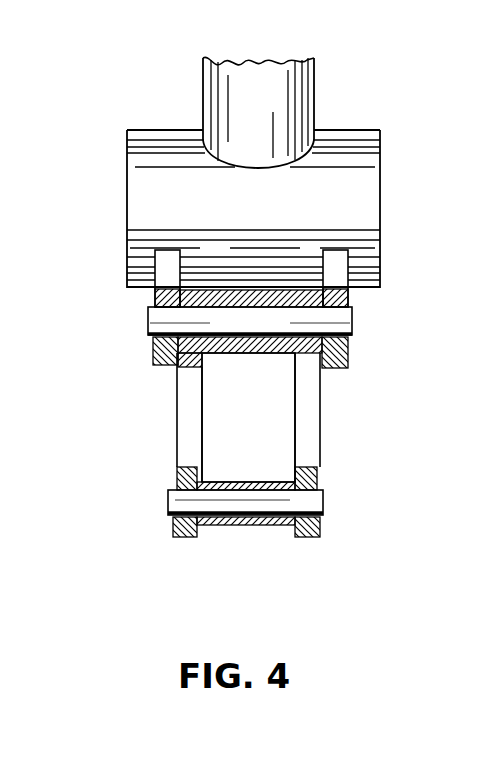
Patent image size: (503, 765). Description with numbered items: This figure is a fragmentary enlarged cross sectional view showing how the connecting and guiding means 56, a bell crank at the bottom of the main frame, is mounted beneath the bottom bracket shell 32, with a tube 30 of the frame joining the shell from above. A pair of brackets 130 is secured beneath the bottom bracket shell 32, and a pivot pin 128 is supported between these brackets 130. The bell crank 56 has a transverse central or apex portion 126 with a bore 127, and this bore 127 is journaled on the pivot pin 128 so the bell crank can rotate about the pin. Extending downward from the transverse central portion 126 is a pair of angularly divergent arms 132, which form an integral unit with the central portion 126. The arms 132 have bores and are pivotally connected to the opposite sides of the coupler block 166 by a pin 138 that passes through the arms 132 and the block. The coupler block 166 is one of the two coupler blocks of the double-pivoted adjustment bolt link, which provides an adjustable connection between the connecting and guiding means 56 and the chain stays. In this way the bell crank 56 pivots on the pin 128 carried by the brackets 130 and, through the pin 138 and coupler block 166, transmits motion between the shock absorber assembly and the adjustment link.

The pipe 30 is at (272, 102).
The bottom bracket shell 32 is at (272, 229).
The brackets 130 is at (167, 264).
The bore 127 is at (243, 311).
The pivot pin 128 is at (348, 322).
The transverse central portion 126 is at (218, 352).
The arms 132 is at (185, 408).
The pin 138 is at (297, 505).
The coupler block 166 is at (258, 525).
The connecting and guiding means 56 is at (321, 534).